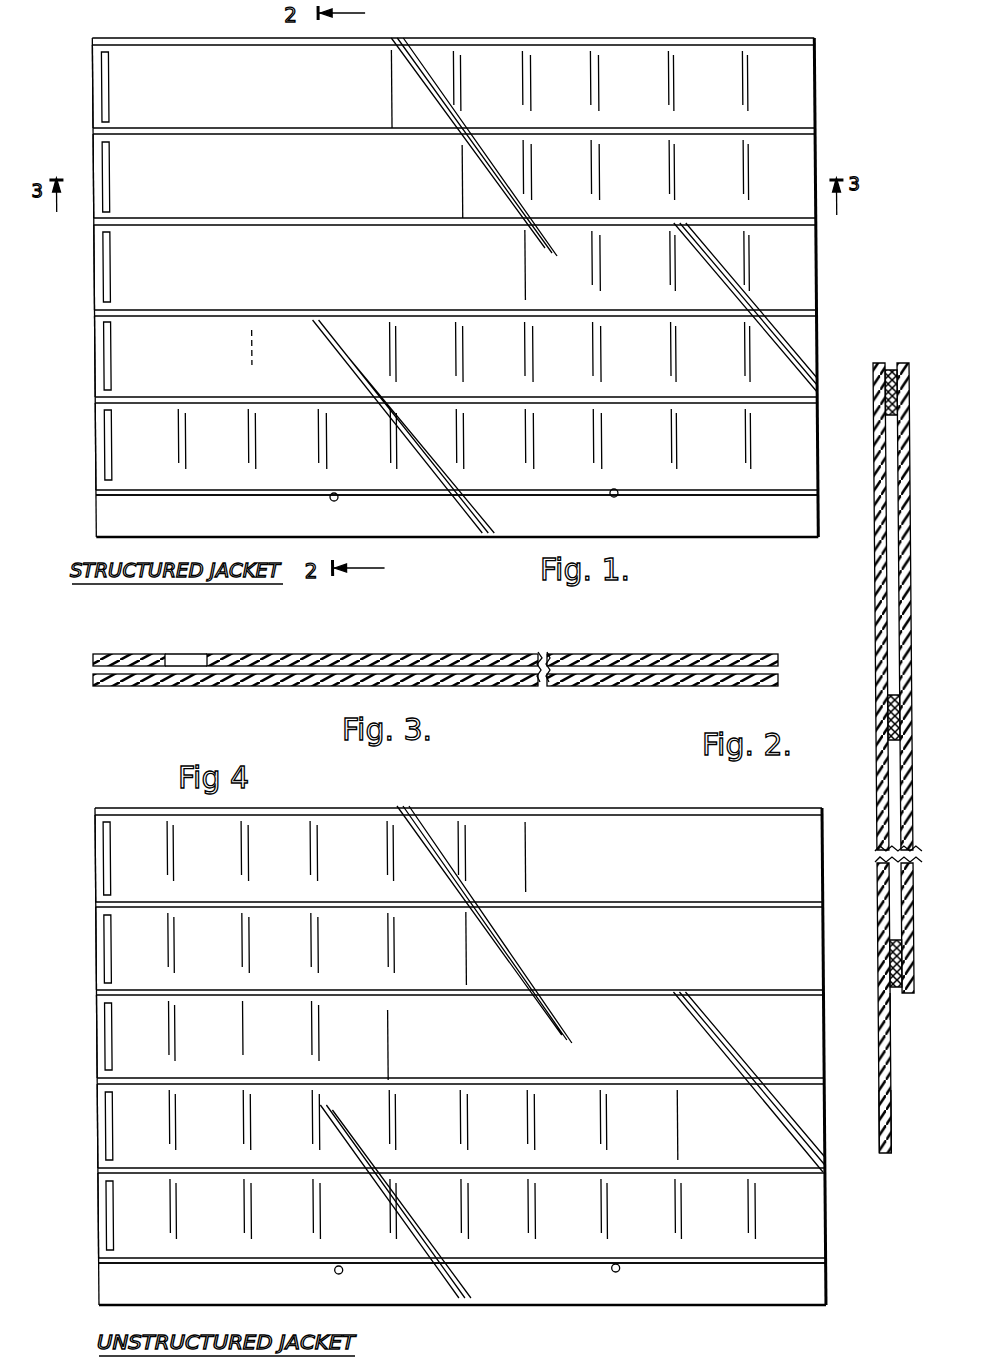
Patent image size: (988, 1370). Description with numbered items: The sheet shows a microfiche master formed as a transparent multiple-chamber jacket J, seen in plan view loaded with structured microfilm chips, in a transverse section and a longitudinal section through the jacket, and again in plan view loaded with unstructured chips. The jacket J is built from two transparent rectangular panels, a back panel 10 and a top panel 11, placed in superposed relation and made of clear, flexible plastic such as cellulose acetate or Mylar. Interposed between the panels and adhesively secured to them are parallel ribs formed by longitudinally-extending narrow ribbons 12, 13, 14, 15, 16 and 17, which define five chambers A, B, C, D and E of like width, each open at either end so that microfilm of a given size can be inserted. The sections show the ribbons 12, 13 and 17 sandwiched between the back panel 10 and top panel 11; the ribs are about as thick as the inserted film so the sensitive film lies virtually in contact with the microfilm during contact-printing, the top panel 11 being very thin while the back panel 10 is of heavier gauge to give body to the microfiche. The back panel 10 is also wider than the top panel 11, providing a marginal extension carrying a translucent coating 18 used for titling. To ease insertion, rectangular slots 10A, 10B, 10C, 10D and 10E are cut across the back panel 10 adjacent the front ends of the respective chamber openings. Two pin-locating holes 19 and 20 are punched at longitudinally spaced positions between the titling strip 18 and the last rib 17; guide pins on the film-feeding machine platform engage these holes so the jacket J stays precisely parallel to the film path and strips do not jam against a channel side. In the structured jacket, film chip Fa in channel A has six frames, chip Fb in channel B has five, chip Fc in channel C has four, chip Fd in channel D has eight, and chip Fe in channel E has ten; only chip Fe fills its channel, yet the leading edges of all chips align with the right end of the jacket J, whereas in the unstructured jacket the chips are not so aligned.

In FIG. 1, the back panel 10 is at (436, 48).
In FIG. 3, the back panel 10 is at (282, 633).
In FIG. 2, the back panel 10 is at (910, 457).
In FIG. 4, the back panel 10 is at (428, 832).
In FIG. 2, the top panel 11 is at (875, 448).
In FIG. 1, the ribbon 12 is at (220, 22).
In FIG. 2, the ribbon 12 is at (909, 394).
In FIG. 1, the ribbon 13 is at (224, 130).
In FIG. 2, the ribbon 13 is at (909, 723).
In FIG. 1, the ribbon 14 is at (226, 222).
In FIG. 1, the ribbon 15 is at (228, 312).
In FIG. 1, the ribbon 16 is at (180, 398).
In FIG. 1, the ribbon 17 is at (165, 497).
In FIG. 2, the ribbon 17 is at (909, 957).
In FIG. 1, the translucent coating 18 is at (750, 520).
In FIG. 2, the translucent coating 18 is at (886, 1098).
In FIG. 1, the pin-locating hole 19 is at (335, 500).
In FIG. 2, the pin-locating hole 19 is at (886, 1016).
In FIG. 1, the pin-locating hole 20 is at (615, 496).
In FIG. 1, the rectangular slot 10A is at (100, 62).
In FIG. 1, the rectangular slot 10B is at (100, 148).
In FIG. 1, the rectangular slot 10C is at (101, 253).
In FIG. 1, the rectangular slot 10D is at (101, 353).
In FIG. 1, the rectangular slot 10E is at (101, 428).
In FIG. 1, the chamber A is at (86, 93).
In FIG. 4, the chamber A is at (95, 862).
In FIG. 1, the chamber B is at (86, 177).
In FIG. 4, the chamber B is at (95, 962).
In FIG. 1, the chamber C is at (86, 276).
In FIG. 4, the chamber C is at (97, 1045).
In FIG. 1, the chamber D is at (86, 367).
In FIG. 4, the chamber D is at (97, 1130).
In FIG. 1, the chamber E is at (86, 476).
In FIG. 4, the chamber E is at (98, 1220).
In FIG. 1, the film chip Fa is at (390, 99).
In FIG. 4, the film chip Fa is at (528, 860).
In FIG. 1, the film chip Fb is at (460, 180).
In FIG. 4, the film chip Fb is at (466, 963).
In FIG. 1, the film chip Fc is at (522, 266).
In FIG. 4, the film chip Fc is at (388, 1046).
In FIG. 1, the film chip Fd is at (353, 426).
In FIG. 4, the film chip Fd is at (676, 1133).
In FIG. 1, the film chip Fe is at (128, 482).
In FIG. 4, the film chip Fe is at (805, 1217).
In FIG. 1, the multiple-chamber jacket J is at (830, 278).